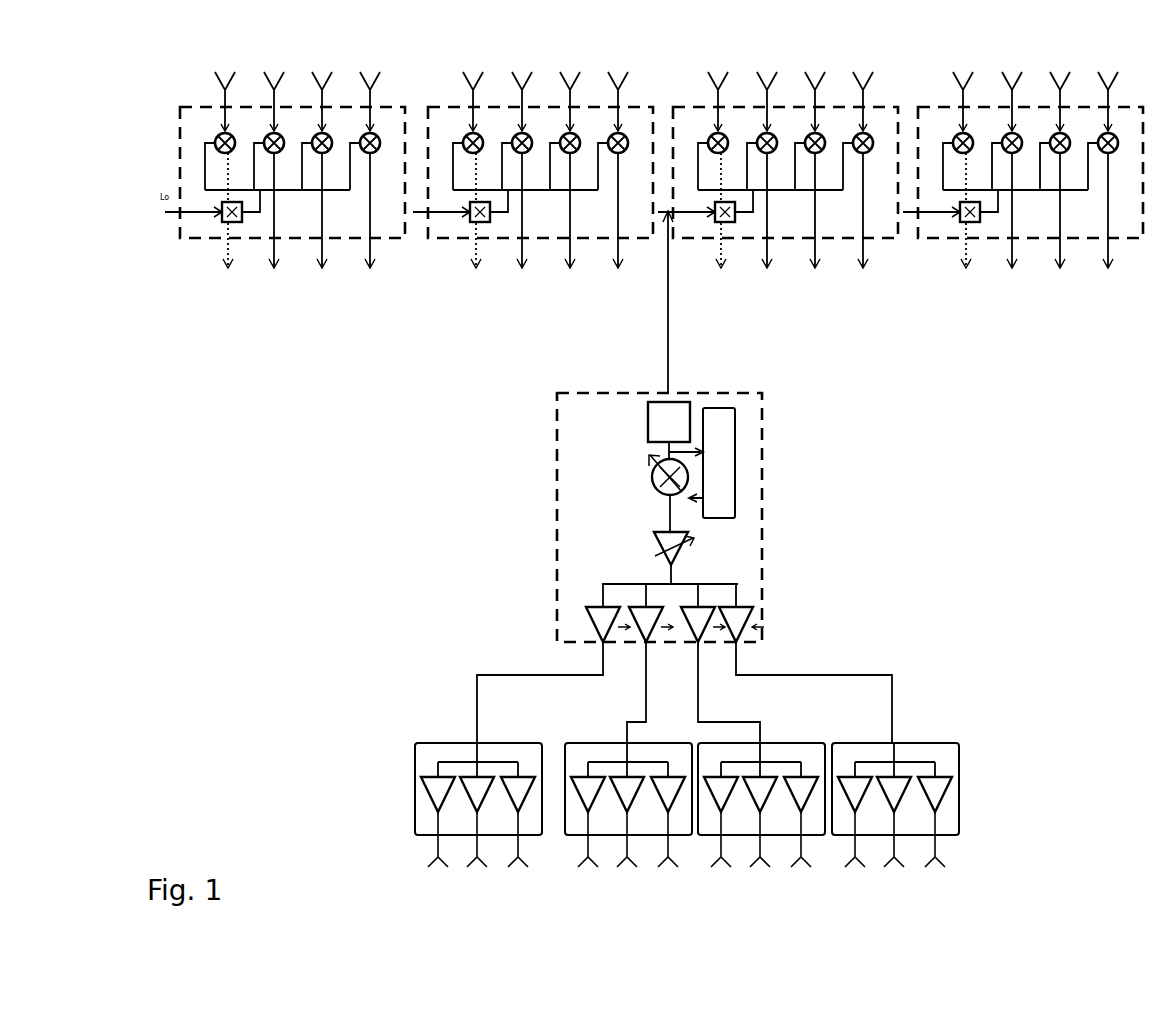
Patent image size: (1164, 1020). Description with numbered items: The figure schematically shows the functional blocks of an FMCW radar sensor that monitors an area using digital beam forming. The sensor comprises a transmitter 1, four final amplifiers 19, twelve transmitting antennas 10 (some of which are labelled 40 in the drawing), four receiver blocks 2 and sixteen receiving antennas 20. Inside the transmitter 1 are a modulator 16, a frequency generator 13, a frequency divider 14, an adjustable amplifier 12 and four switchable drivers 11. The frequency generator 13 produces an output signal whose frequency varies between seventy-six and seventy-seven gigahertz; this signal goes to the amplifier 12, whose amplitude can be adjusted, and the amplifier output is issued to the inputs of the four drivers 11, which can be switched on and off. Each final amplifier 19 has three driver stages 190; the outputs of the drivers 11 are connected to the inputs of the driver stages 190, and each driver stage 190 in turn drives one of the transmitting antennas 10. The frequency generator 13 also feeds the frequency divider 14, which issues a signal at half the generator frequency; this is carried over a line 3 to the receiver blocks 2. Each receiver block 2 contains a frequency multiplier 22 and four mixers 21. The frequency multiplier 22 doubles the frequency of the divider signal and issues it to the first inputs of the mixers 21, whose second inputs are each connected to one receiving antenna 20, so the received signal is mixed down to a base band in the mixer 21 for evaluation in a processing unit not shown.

The transmitter 1 is at (740, 522).
The receiver block 2 is at (210, 222).
The local oscillator line 3 is at (662, 302).
The transmitting antenna 10 is at (437, 873).
The switchable driver 11 is at (593, 604).
The adjustable amplifier 12 is at (686, 560).
The frequency generator 13 is at (655, 492).
The frequency divider 14 is at (690, 404).
The modulator 16 is at (718, 416).
The final amplifier 19 is at (420, 746).
The receiving antenna 20 is at (666, 70).
The mixer 21 is at (661, 194).
The frequency multiplier 22 is at (588, 250).
The transmit antenna 40 is at (724, 873).
The driver stage 190 is at (516, 785).